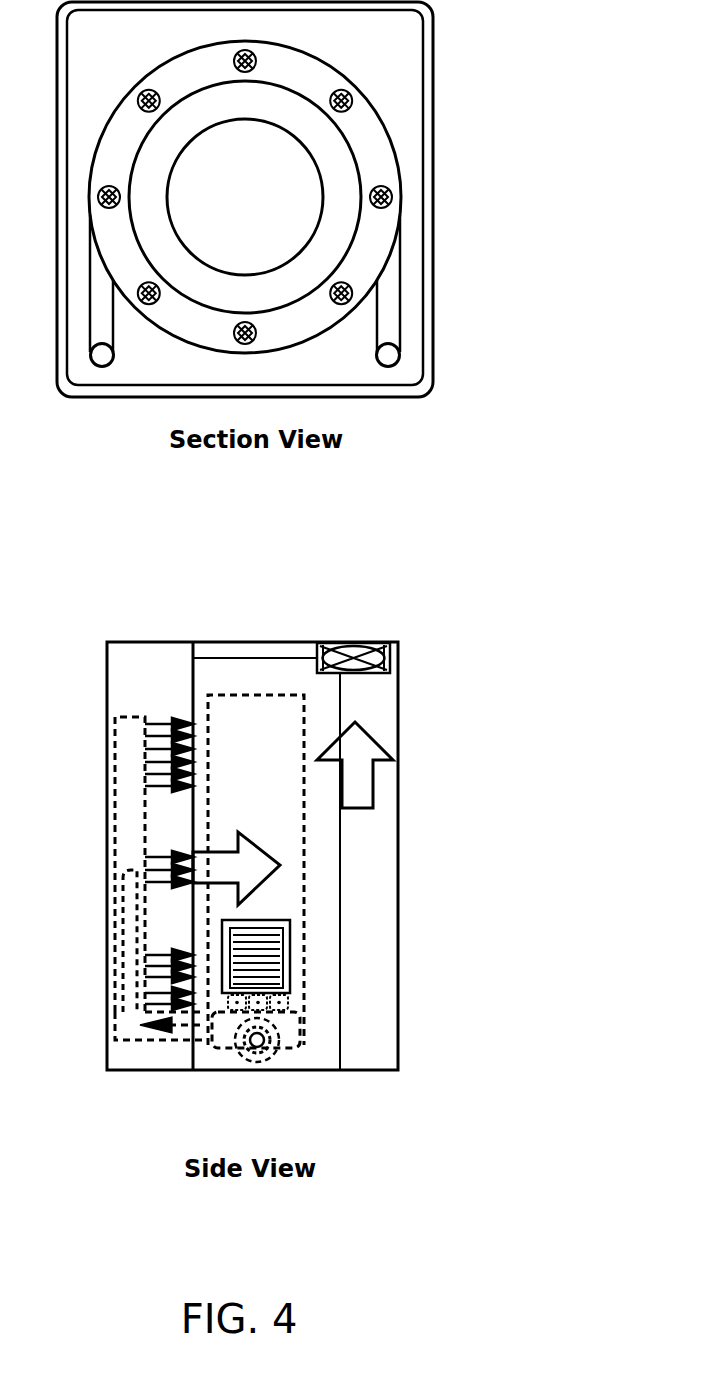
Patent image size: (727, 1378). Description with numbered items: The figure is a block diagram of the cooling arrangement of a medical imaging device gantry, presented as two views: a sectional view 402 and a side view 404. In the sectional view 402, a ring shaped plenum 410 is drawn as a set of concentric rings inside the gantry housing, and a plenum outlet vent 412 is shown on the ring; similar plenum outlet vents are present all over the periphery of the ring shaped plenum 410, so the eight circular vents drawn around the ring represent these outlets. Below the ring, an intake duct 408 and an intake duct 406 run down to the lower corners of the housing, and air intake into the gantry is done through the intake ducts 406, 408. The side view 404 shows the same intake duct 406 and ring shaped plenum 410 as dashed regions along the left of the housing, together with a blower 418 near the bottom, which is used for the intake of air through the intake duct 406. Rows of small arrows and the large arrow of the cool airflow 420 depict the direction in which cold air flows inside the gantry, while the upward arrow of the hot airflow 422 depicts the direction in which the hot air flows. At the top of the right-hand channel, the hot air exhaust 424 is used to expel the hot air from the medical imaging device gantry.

The sectional view 402 is at (535, 355).
The side view 404 is at (534, 1054).
The intake duct 406 is at (376, 354).
The intake duct 408 is at (115, 359).
The ring shaped plenum 410 is at (327, 61).
The plenum outlet vent 412 is at (148, 91).
The blower 418 is at (278, 1058).
The cool airflow 420 is at (225, 848).
The hot airflow 422 is at (372, 786).
The hot air exhaust 424 is at (358, 646).